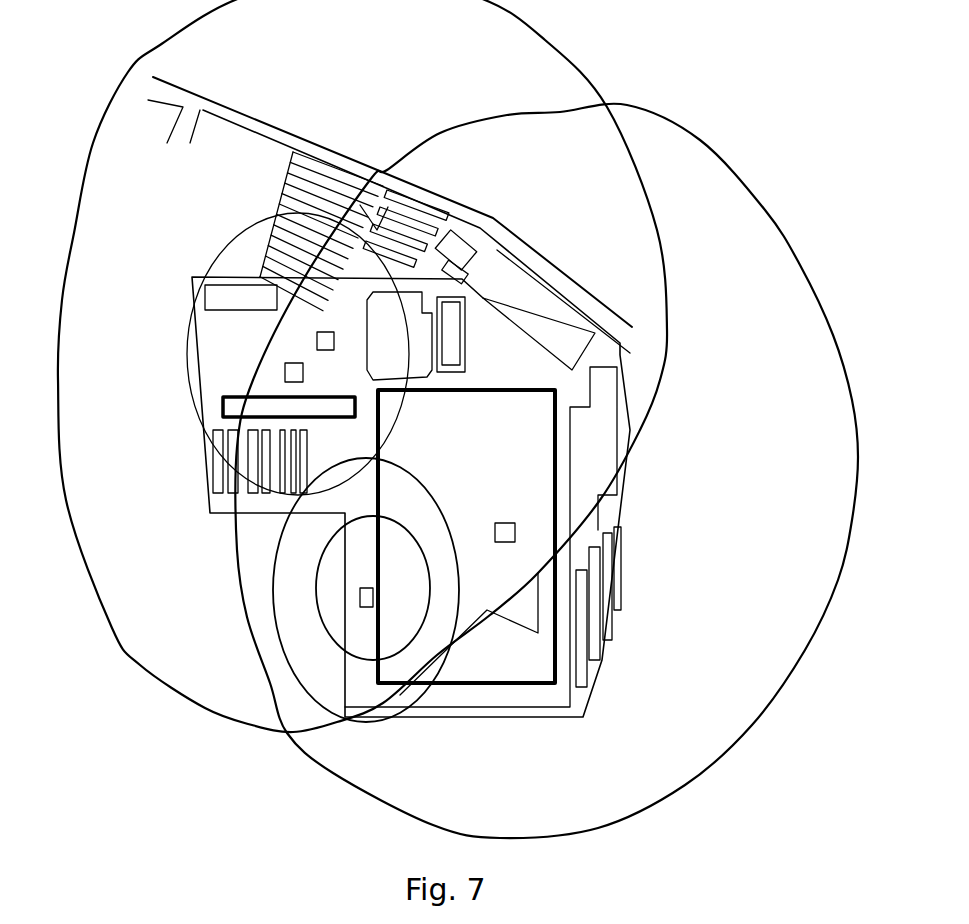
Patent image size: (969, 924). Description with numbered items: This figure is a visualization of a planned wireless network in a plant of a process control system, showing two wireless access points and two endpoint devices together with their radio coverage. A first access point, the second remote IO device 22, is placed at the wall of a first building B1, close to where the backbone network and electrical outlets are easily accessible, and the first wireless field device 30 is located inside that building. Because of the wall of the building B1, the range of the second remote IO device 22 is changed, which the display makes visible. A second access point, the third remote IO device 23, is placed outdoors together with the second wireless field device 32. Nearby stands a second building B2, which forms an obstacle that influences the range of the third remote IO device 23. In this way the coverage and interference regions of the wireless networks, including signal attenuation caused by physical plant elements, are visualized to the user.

The second remote IO device 22 is at (360, 597).
The third remote IO device 23 is at (285, 380).
The first wireless field device 30 is at (515, 530).
The second wireless field device 32 is at (334, 334).
The first building B1 is at (553, 635).
The second building B2 is at (223, 412).